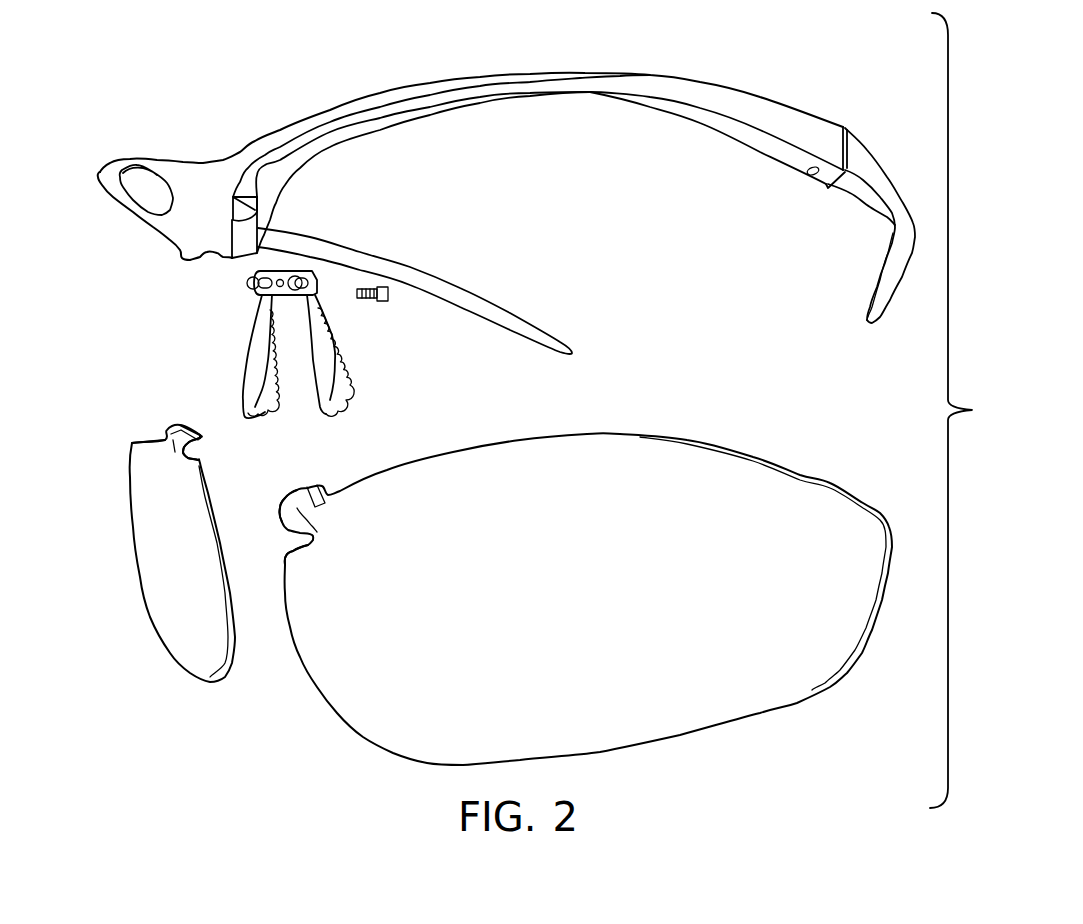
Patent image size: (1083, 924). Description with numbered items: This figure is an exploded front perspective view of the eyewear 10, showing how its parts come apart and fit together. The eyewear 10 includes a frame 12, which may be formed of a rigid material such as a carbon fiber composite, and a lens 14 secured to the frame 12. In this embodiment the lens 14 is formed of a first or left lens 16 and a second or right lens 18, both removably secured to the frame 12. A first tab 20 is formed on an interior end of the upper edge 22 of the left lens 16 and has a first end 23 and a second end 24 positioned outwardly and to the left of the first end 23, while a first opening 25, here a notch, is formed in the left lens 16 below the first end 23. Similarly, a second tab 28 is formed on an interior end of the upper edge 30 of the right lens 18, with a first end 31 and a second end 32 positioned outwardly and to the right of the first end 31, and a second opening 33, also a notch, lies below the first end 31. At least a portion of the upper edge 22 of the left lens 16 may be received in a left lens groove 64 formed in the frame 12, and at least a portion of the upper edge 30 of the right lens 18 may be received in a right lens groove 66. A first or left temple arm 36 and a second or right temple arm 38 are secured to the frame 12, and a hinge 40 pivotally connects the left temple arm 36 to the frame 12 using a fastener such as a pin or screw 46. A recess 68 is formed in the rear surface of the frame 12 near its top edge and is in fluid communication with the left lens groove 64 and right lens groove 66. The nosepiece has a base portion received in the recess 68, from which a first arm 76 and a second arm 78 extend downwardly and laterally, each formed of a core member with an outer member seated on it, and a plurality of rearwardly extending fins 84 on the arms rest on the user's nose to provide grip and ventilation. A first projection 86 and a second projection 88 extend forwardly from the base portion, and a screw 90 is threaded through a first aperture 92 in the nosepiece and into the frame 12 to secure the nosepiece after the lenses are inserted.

The eyewear 10 is at (759, 72).
The frame 12 is at (205, 172).
The lens 14 is at (261, 695).
The left lens 16 is at (578, 601).
The right lens 18 is at (163, 585).
The first tab 20 is at (308, 512).
The upper edge 22 is at (617, 432).
The first end 23 is at (282, 515).
The second end 24 is at (318, 494).
The first opening 25 is at (290, 543).
The second tab 28 is at (174, 445).
The upper edge 30 is at (150, 443).
The first end 31 is at (197, 437).
The second end 32 is at (168, 425).
The second opening 33 is at (201, 454).
The left temple arm 36 is at (887, 180).
The right temple arm 38 is at (393, 262).
The hinge 40 is at (822, 209).
The screw 46 is at (810, 173).
The left lens groove 64 is at (453, 104).
The right lens groove 66 is at (143, 170).
The recess 68 is at (232, 211).
The first arm 76 is at (320, 380).
The second arm 78 is at (255, 343).
The fins 84 is at (352, 376).
The first projection 86 is at (300, 278).
The second projection 88 is at (247, 285).
The screw 90 is at (376, 298).
The first aperture 92 is at (283, 278).